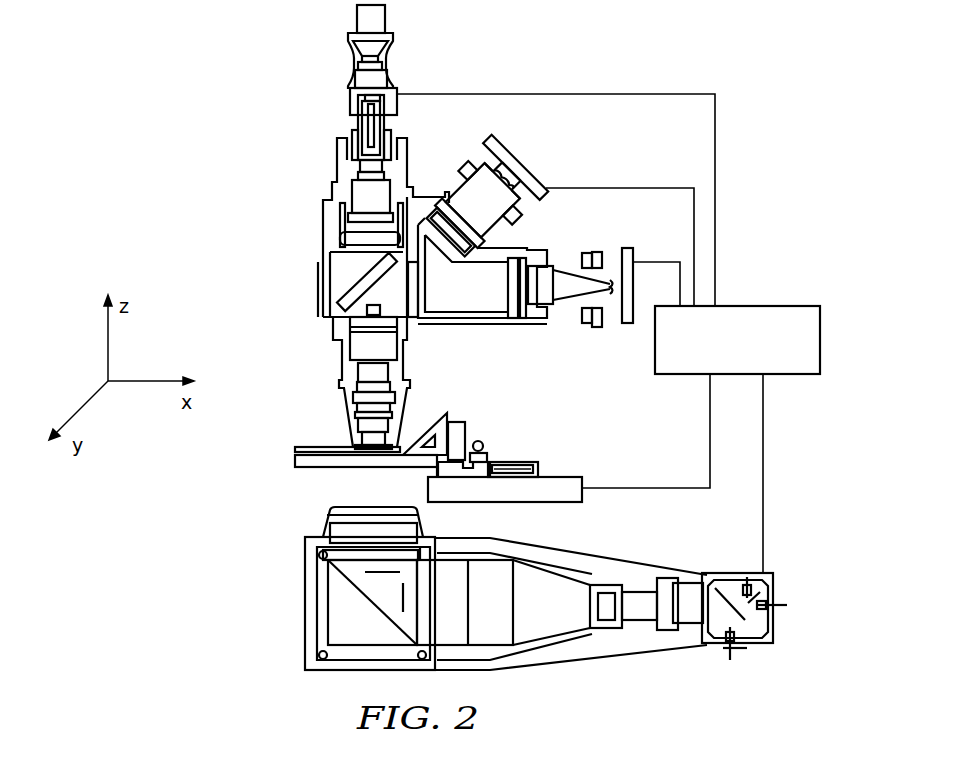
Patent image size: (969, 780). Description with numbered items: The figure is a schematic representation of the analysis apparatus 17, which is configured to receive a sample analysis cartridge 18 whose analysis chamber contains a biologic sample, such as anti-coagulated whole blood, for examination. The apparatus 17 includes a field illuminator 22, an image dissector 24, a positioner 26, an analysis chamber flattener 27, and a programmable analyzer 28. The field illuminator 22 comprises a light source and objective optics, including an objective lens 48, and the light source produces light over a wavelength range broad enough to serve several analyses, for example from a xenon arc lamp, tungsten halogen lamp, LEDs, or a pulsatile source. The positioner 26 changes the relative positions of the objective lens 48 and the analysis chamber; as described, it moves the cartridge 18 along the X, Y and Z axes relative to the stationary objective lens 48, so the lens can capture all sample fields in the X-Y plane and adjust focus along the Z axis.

The analysis apparatus 17 is at (576, 72).
The field illuminator 22 is at (330, 159).
The image dissector 24 is at (520, 149).
The objective lens 48 is at (330, 411).
The analysis chamber flattener 27 is at (308, 448).
The sample analysis cartridge 18 is at (295, 458).
The positioner 26 is at (498, 443).
The programmable analyzer 28 is at (783, 377).